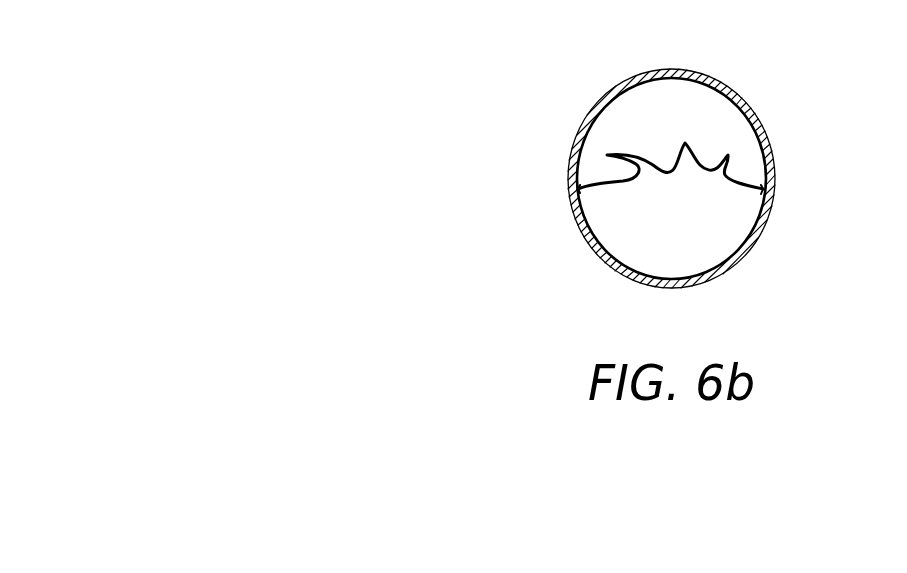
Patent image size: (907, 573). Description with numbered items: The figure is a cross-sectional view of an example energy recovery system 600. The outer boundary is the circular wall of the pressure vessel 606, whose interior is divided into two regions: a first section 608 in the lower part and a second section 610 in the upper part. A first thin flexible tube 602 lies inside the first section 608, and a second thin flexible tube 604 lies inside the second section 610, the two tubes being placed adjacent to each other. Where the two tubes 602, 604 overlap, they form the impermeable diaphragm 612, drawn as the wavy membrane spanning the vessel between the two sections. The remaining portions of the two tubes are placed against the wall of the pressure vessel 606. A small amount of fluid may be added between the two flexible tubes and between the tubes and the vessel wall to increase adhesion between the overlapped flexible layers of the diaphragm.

The energy recovery system 600 is at (625, 164).
The first thin flexible tube 602 is at (612, 258).
The second thin flexible tube 604 is at (650, 76).
The pressure vessel 606 is at (774, 190).
The first section 608 is at (738, 214).
The second section 610 is at (725, 120).
The impermeable diaphragm 612 is at (745, 183).